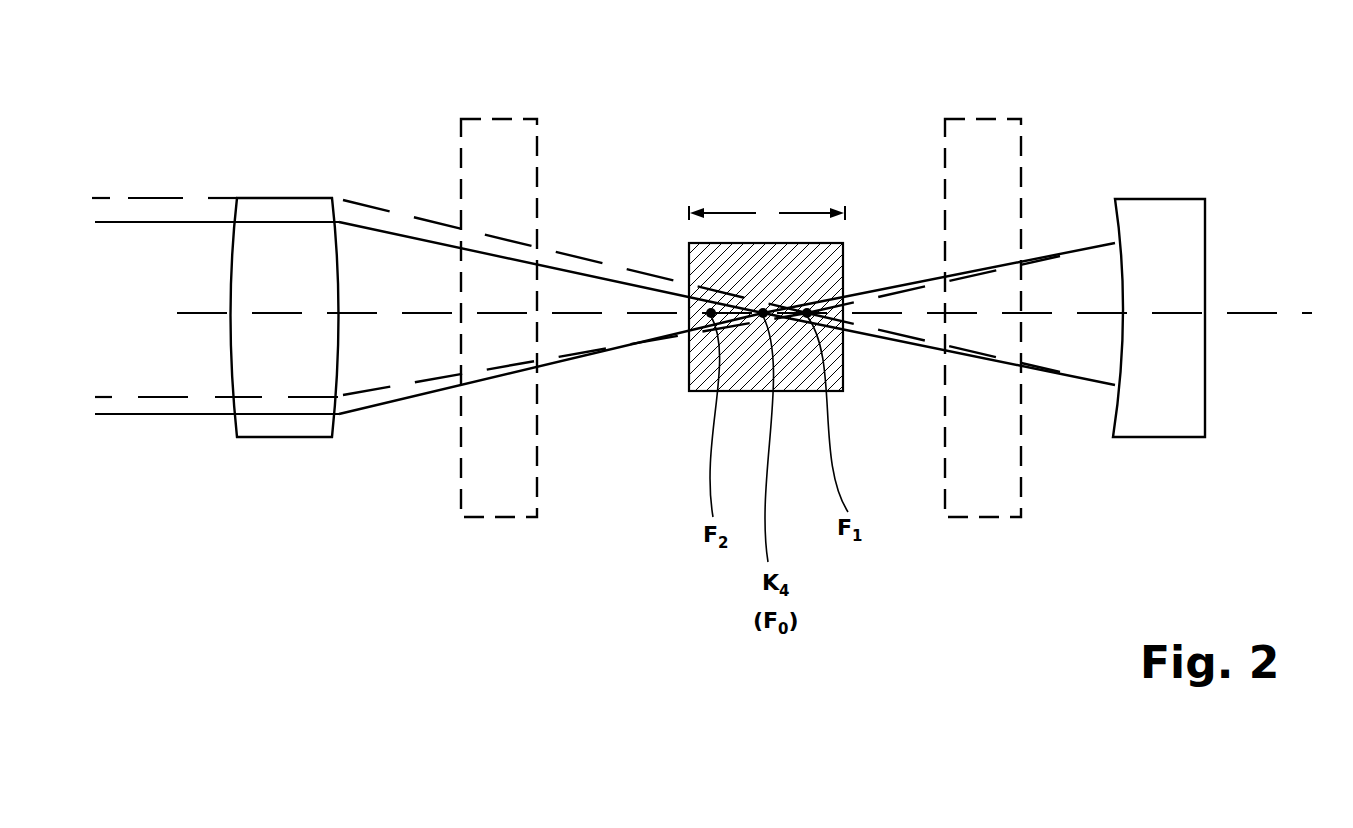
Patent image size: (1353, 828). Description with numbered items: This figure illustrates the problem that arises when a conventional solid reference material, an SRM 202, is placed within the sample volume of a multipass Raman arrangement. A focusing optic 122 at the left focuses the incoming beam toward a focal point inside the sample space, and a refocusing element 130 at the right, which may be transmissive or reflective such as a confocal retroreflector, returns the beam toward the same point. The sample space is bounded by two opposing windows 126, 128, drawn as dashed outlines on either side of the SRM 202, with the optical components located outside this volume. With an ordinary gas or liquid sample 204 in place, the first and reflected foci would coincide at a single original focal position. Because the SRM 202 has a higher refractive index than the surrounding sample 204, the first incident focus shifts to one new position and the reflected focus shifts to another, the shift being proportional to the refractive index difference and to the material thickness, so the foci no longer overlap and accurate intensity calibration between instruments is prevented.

The focusing optic 122 is at (271, 198).
The window 126 is at (492, 119).
The window 128 is at (978, 119).
The refocusing element 130 is at (1155, 199).
The SRM 202 is at (759, 150).
The gas or liquid sample 204 is at (765, 208).